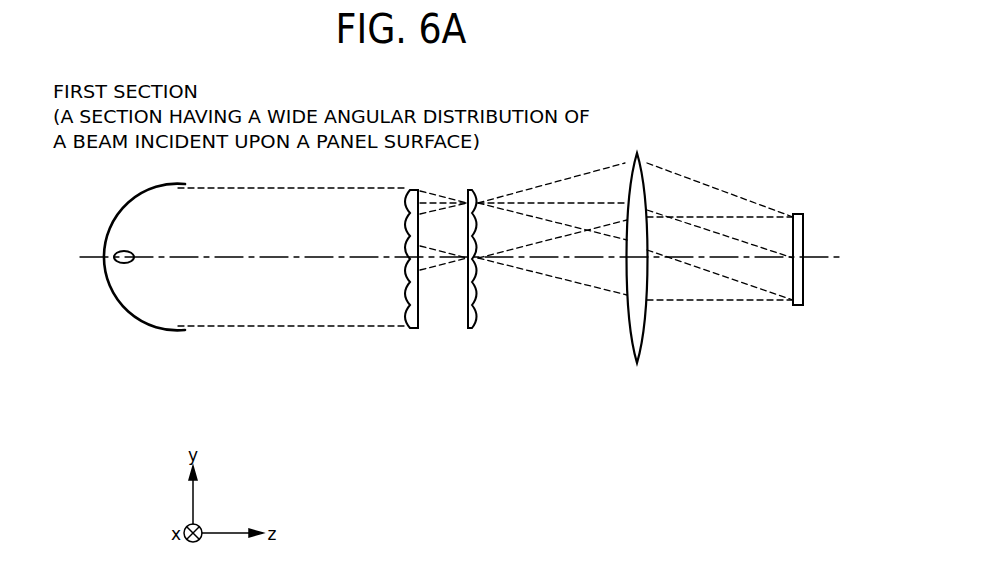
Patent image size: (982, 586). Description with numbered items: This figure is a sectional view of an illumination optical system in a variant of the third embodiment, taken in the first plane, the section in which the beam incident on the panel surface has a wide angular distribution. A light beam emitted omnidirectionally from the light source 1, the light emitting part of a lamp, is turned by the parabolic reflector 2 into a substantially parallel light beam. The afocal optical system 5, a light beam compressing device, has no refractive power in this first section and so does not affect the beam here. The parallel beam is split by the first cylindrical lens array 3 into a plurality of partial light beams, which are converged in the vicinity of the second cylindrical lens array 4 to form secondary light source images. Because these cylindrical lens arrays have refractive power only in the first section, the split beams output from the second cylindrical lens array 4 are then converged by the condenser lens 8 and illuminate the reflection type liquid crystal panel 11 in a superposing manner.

The light source 1 is at (127, 263).
The parabolic reflector 2 is at (155, 323).
The afocal optical system 5 is at (238, 328).
The first cylindrical lens array 3 is at (414, 329).
The second cylindrical lens array 4 is at (470, 329).
The condenser lens 8 is at (637, 364).
The reflection type liquid crystal panel 11 is at (799, 306).